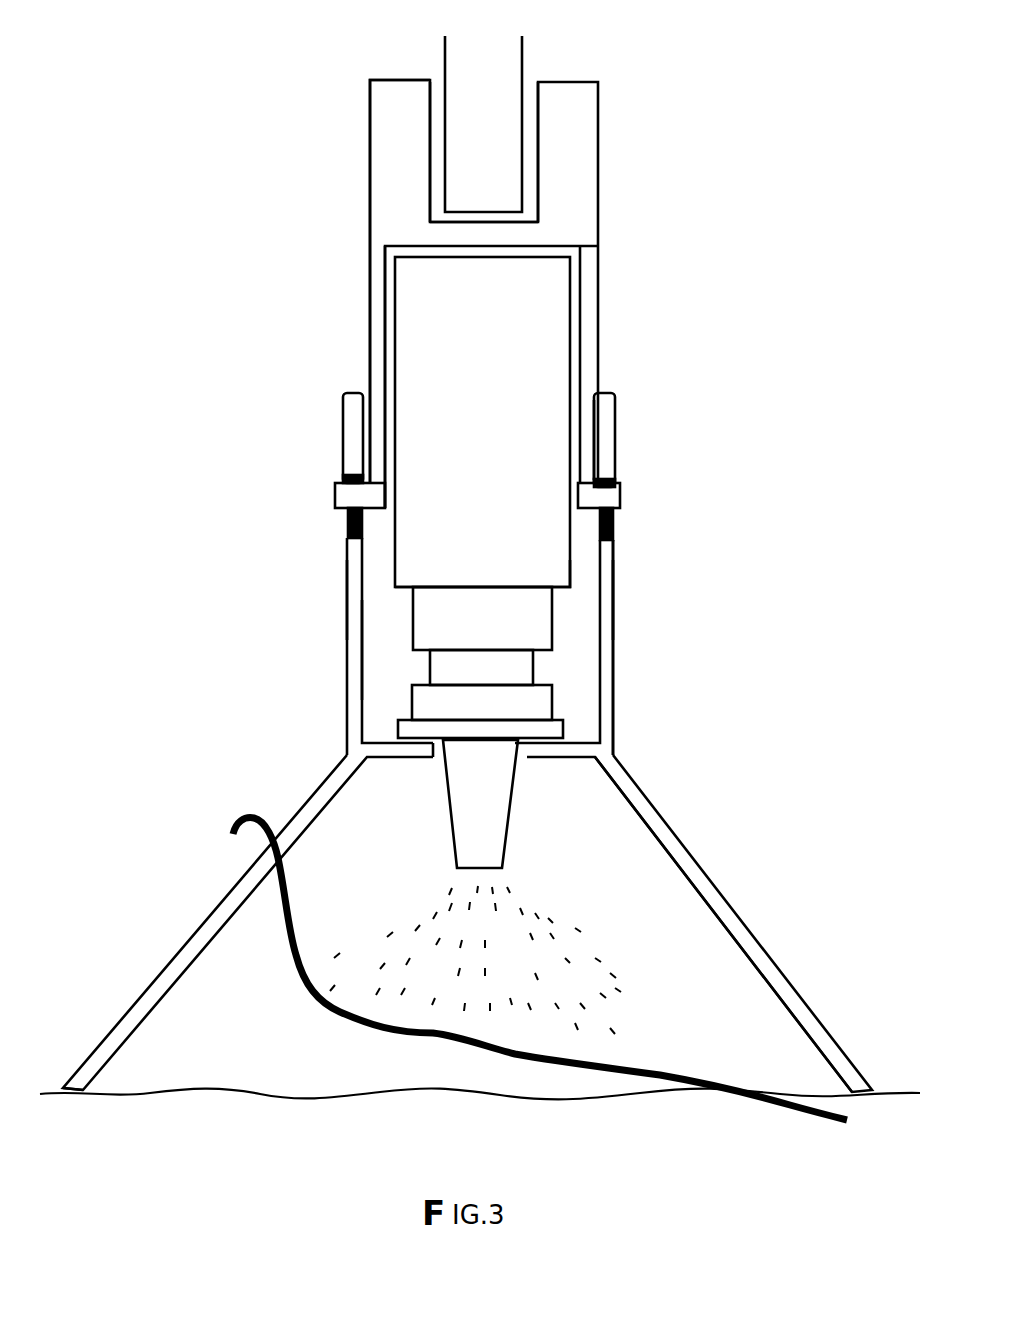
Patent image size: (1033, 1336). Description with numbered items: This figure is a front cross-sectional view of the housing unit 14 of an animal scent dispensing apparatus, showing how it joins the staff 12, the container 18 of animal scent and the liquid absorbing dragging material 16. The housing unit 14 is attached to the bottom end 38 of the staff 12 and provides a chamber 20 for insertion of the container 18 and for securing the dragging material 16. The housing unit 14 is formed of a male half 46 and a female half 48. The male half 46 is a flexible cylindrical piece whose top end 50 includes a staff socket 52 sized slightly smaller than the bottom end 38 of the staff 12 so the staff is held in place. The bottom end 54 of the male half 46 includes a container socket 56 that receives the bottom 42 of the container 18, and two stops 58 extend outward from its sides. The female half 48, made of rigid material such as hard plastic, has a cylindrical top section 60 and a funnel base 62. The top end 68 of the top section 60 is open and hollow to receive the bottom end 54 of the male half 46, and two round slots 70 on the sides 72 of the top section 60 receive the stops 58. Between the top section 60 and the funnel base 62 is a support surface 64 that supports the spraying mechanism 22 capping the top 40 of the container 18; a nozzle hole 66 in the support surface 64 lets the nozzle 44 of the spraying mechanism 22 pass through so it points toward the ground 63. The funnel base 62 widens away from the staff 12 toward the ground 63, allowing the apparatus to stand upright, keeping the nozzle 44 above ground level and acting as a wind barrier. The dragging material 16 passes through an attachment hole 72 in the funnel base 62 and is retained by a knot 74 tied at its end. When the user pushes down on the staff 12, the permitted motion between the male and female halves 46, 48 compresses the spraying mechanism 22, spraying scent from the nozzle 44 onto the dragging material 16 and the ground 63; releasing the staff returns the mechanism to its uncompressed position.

The staff 12 is at (526, 57).
The housing unit 14 is at (230, 480).
The liquid absorbing dragging material 16 is at (815, 1127).
The container 18 is at (492, 358).
The chamber 20 is at (393, 640).
The spraying mechanism 22 is at (533, 637).
The bottom end of the staff 38 is at (484, 203).
The top of the container 40 is at (570, 585).
The bottom of the container 42 is at (587, 250).
The nozzle 44 is at (517, 849).
The male half 46 is at (366, 262).
The female half 48 is at (288, 673).
The top end of the male half 50 is at (604, 127).
The staff socket 52 is at (535, 110).
The bottom end of the male half 54 is at (378, 469).
The container socket 56 is at (383, 312).
The stops 58 is at (350, 497).
The cylindrical top section 60 is at (619, 673).
The funnel base 62 is at (690, 875).
The ground 63 is at (72, 1097).
The support surface 64 is at (560, 770).
The nozzle hole 66 is at (431, 772).
The top end of the top section 68 is at (613, 420).
The round slots 70 is at (342, 532).
The attachment hole 72 is at (355, 605).
The knot 74 is at (232, 815).